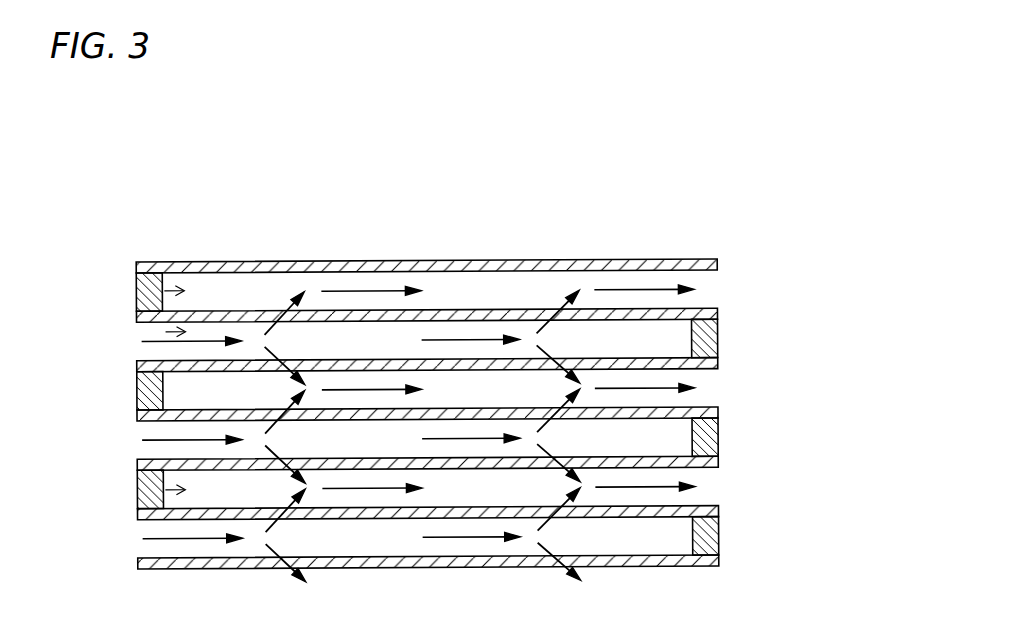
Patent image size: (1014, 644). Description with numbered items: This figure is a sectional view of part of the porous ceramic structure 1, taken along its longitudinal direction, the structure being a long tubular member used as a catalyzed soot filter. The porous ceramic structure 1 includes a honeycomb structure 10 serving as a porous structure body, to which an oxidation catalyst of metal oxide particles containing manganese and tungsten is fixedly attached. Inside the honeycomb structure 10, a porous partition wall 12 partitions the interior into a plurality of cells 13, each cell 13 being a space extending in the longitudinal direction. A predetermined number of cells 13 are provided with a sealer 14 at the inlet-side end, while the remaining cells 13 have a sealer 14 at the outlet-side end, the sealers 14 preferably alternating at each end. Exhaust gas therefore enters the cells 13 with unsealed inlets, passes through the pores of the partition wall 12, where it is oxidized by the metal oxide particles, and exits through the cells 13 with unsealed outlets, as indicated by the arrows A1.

The porous ceramic structure 1 is at (280, 198).
The honeycomb structure 10 is at (643, 245).
The partition wall 12 is at (486, 263).
The cell 13 is at (170, 290).
The sealer 14 is at (143, 393).
The arrows indicating exhaust gas flow A1 is at (283, 310).